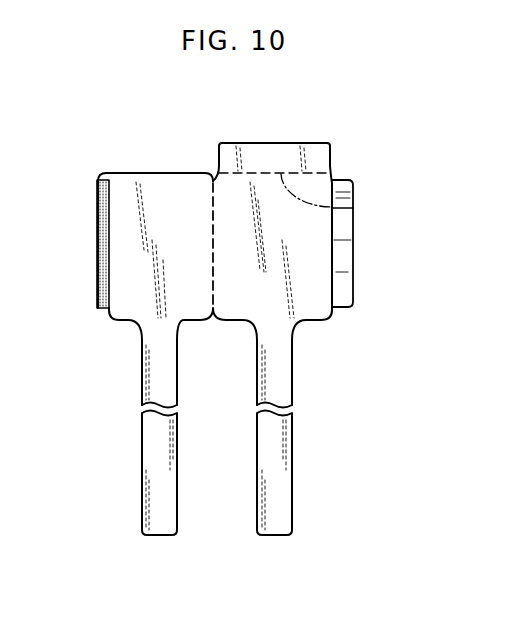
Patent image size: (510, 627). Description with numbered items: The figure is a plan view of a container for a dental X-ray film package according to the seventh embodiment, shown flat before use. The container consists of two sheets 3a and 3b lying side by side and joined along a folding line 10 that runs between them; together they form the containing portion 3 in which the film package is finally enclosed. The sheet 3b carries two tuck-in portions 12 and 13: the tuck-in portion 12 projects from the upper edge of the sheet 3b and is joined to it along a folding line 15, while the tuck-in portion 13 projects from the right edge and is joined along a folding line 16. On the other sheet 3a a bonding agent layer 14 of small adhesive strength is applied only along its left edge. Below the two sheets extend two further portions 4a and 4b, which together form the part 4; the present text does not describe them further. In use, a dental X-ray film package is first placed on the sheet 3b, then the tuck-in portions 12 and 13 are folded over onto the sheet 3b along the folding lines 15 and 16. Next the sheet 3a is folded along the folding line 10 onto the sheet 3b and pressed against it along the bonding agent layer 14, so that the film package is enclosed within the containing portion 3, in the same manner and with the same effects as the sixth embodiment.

The containing portion 3 is at (218, 253).
The sheet 3a is at (133, 185).
The sheet 3b is at (313, 300).
The terminal legs 4 is at (222, 440).
The first leg 4a is at (148, 476).
The second leg 4b is at (281, 483).
The folding line 10 is at (214, 255).
The tuck-in portion 12 is at (285, 155).
The tuck-in portion 13 is at (346, 298).
The bonding agent layer 14 is at (99, 295).
The folding line 15 is at (353, 208).
The folding line 16 is at (346, 247).